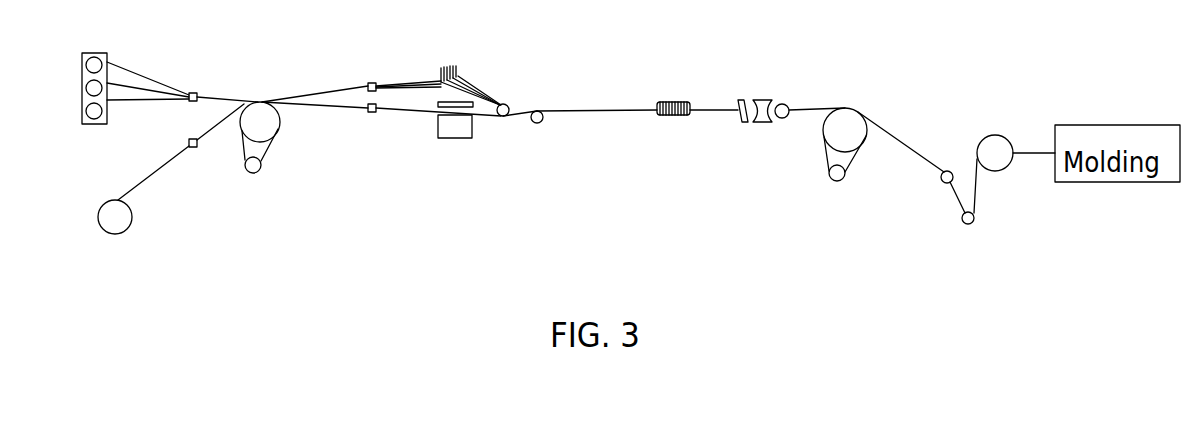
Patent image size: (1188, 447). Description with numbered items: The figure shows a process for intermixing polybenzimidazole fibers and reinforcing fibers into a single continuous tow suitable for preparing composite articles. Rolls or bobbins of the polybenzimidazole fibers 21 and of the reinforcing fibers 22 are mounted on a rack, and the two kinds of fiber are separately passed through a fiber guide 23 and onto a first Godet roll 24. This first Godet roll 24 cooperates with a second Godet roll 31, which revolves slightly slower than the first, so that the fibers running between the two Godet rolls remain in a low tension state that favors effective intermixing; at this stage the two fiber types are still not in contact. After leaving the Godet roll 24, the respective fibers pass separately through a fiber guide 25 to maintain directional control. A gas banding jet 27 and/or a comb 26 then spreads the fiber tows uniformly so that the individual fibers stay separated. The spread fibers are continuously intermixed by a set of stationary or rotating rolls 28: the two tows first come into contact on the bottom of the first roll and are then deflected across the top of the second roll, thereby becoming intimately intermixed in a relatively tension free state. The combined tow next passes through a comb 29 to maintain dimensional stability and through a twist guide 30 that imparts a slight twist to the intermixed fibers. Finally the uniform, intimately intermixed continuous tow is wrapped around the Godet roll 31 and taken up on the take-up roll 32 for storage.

The polybenzimidazole fibers 21 is at (132, 220).
The reinforcing fibers 22 is at (106, 53).
The fiber guide 23 is at (193, 101).
The first Godet roll 24 is at (280, 117).
The fiber guide 25 is at (376, 91).
The comb 26 is at (455, 74).
The gas banding jet 27 is at (453, 138).
The stationary or rotating rolls 28 is at (505, 104).
The comb 29 is at (672, 101).
The twist guide 30 is at (767, 100).
The second Godet roll 31 is at (852, 109).
The take-up roll 32 is at (997, 135).